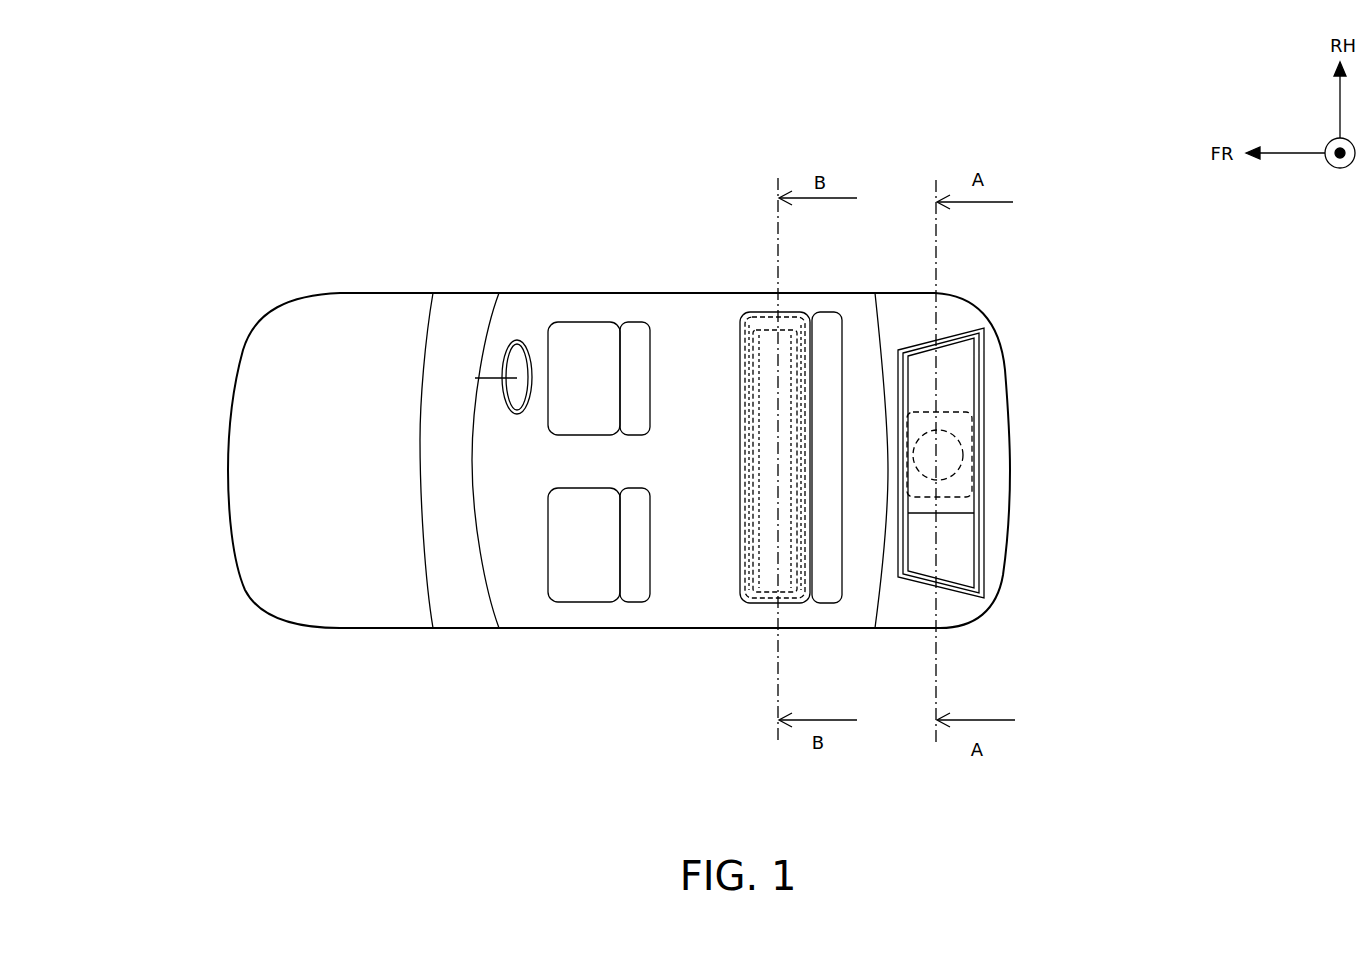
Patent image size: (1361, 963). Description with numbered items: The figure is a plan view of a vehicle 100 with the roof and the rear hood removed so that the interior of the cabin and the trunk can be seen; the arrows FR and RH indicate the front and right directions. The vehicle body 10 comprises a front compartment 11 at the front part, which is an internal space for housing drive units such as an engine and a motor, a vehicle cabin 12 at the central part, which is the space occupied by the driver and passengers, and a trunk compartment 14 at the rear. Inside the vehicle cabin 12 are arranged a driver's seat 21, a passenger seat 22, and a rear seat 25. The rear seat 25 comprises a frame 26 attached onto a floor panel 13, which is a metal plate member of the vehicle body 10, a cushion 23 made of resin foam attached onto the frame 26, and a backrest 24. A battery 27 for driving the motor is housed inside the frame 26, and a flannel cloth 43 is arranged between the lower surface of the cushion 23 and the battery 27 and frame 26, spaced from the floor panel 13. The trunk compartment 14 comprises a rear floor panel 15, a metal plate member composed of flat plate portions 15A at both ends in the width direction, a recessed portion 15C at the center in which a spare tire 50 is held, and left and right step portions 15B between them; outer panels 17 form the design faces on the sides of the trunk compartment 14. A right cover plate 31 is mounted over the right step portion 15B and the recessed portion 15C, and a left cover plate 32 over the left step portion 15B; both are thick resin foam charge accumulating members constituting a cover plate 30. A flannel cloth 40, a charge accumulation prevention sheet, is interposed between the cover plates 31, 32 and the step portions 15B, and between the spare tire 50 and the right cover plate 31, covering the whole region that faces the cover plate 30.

The vehicle 100 is at (600, 448).
The vehicle body 10 is at (222, 467).
The front compartment 11 is at (305, 568).
The vehicle cabin 12 is at (532, 595).
The floor panel 13 is at (697, 588).
The trunk compartment 14 is at (963, 300).
The rear floor panel 15 is at (1043, 510).
The flat plate portions 15A is at (958, 620).
The step portions 15B is at (970, 597).
The recessed portion 15C is at (938, 500).
The outer panels 17 is at (953, 325).
The driver's seat 21 is at (575, 318).
The passenger seat 22 is at (590, 605).
The cushion 23 is at (770, 312).
The backrest 24 is at (823, 312).
The rear seat 25 is at (732, 448).
The frame 26 is at (740, 347).
The battery 27 is at (760, 604).
The cover plate 30 is at (1044, 444).
The right cover plate 31 is at (980, 465).
The left cover plate 32 is at (975, 520).
The flannel cloth 40 is at (983, 353).
The flannel cloth 43 is at (743, 603).
The spare tire 50 is at (957, 432).